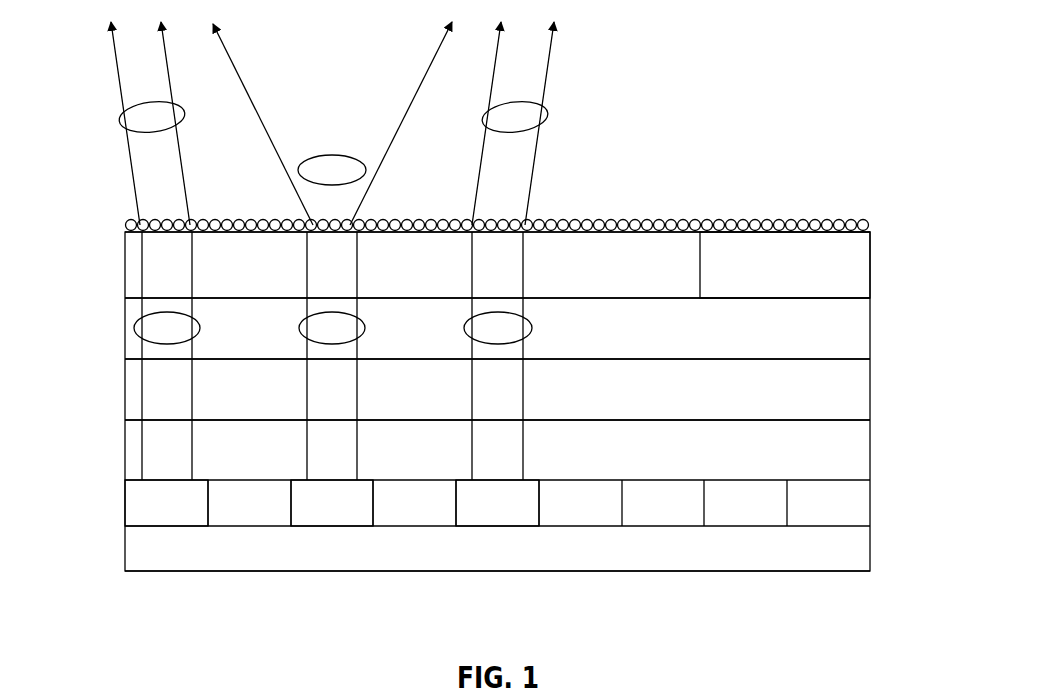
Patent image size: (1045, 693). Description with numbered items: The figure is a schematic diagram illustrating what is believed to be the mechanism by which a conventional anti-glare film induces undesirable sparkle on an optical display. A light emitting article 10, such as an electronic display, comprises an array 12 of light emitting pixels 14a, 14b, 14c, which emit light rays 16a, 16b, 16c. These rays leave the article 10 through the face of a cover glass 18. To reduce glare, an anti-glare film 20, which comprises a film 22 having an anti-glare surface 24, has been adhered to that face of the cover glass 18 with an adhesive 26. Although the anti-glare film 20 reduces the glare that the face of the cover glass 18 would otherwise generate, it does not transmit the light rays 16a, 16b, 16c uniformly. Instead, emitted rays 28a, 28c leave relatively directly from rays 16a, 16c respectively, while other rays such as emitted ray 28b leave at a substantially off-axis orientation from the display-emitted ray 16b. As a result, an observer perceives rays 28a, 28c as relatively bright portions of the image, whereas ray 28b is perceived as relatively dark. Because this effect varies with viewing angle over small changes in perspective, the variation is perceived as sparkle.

The light emitting article 10 is at (888, 420).
The array 12 is at (124, 500).
The light emitting pixel 14a is at (160, 527).
The light emitting pixel 14b is at (333, 527).
The light emitting pixel 14c is at (497, 527).
The light ray 16a is at (134, 328).
The light ray 16b is at (300, 328).
The light ray 16c is at (532, 329).
The cover glass 18 is at (854, 381).
The anti-glare film 20 is at (883, 222).
The film 22 is at (826, 268).
The anti-glare surface 24 is at (728, 220).
The adhesive 26 is at (853, 325).
The emitted ray 28a is at (118, 123).
The emitted ray 28b is at (333, 156).
The emitted ray 28c is at (548, 123).